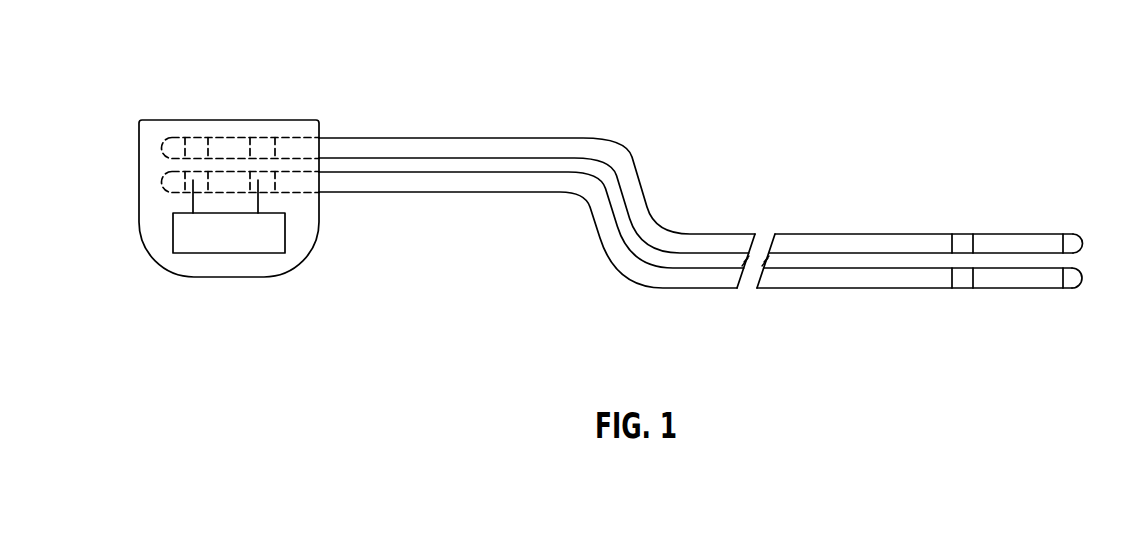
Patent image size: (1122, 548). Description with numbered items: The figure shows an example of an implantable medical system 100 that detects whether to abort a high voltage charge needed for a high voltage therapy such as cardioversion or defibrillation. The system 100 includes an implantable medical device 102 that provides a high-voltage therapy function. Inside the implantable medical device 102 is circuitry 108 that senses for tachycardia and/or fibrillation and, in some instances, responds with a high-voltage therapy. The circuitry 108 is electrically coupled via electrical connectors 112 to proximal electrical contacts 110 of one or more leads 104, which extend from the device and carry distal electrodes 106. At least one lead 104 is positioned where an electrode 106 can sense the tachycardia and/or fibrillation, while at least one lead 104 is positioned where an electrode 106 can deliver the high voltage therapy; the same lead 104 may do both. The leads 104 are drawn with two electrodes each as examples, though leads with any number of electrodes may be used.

The implantable medical system 100 is at (428, 82).
The implantable medical device 102 is at (303, 247).
The lead 104 is at (630, 153).
The distal electrode 106 is at (1070, 234).
The circuitry 108 is at (285, 227).
The proximal electrical contact 110 is at (183, 180).
The electrical connector 112 is at (192, 181).